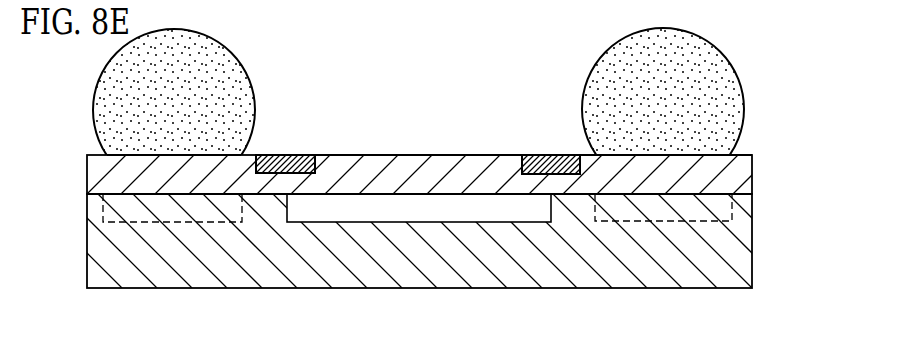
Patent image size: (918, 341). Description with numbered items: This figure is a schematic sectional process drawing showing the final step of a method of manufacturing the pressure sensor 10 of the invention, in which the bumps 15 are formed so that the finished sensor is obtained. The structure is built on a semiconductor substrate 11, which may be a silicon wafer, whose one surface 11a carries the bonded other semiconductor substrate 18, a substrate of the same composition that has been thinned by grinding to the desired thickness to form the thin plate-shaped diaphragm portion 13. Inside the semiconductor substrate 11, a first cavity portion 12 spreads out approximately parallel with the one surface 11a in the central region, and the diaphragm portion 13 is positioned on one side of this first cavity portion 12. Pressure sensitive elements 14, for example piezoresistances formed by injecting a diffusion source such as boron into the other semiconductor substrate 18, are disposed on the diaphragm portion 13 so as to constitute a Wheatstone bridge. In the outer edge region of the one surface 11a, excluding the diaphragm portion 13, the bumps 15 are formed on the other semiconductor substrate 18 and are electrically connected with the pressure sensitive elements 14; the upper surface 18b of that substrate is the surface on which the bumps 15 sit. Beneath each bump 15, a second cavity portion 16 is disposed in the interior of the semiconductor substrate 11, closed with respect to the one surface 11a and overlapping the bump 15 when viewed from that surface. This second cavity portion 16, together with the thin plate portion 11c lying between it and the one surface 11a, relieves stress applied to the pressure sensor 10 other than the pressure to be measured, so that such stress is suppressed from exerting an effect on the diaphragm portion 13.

The pressure sensor 10 is at (762, 82).
The semiconductor substrate 11 is at (741, 241).
The one surface of the semiconductor substrate 11a is at (745, 194).
The thin plate portion 11c is at (163, 178).
The first cavity portion 12 is at (419, 214).
The diaphragm portion 13 is at (433, 177).
The pressure sensitive element 14 is at (302, 155).
The bump 15 is at (213, 52).
The second cavity portion 16 is at (187, 223).
The other semiconductor substrate 18 is at (740, 172).
The insulating layer upper surface 18b is at (740, 155).